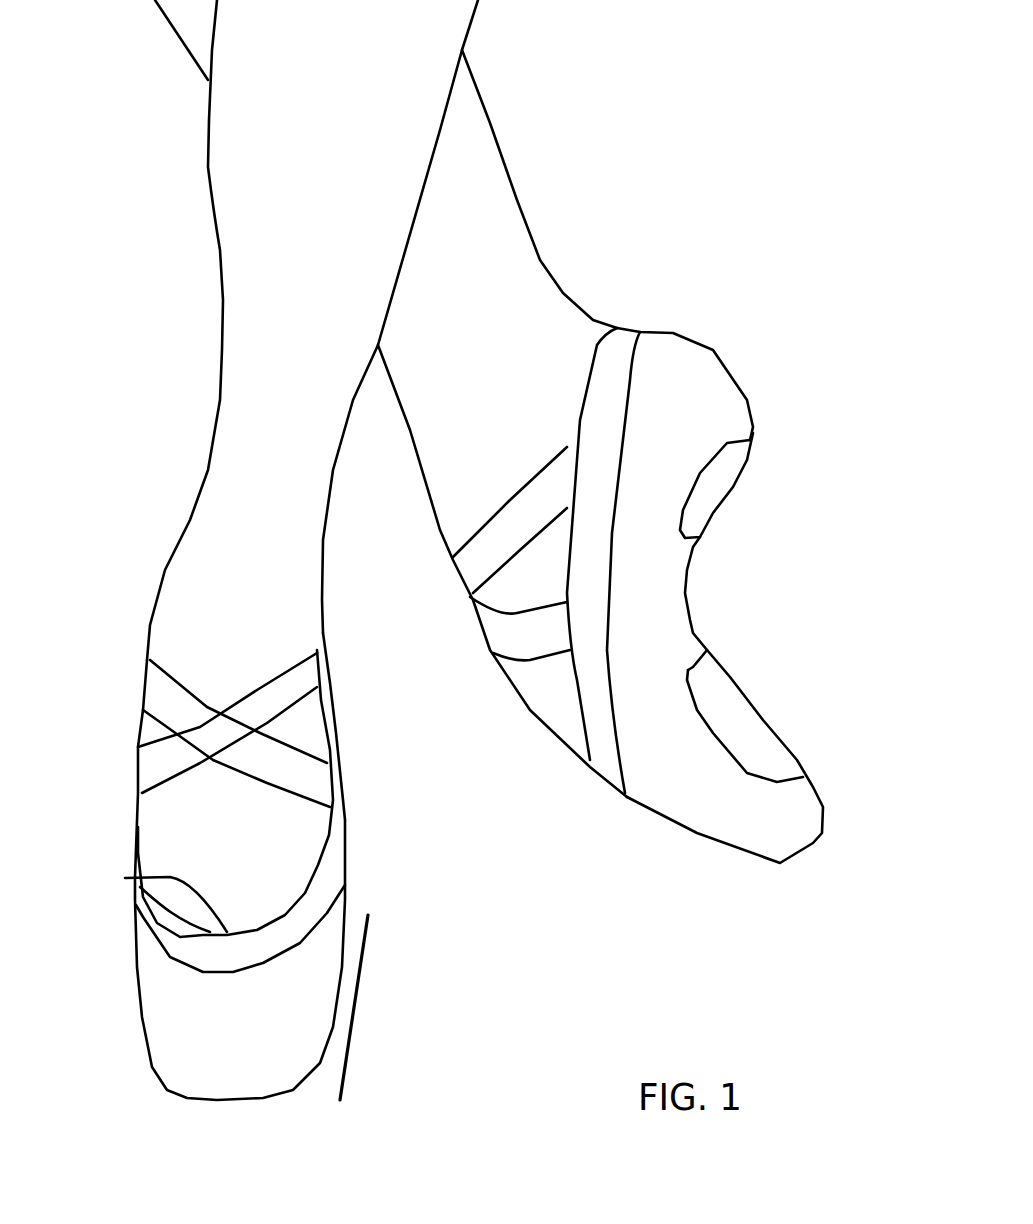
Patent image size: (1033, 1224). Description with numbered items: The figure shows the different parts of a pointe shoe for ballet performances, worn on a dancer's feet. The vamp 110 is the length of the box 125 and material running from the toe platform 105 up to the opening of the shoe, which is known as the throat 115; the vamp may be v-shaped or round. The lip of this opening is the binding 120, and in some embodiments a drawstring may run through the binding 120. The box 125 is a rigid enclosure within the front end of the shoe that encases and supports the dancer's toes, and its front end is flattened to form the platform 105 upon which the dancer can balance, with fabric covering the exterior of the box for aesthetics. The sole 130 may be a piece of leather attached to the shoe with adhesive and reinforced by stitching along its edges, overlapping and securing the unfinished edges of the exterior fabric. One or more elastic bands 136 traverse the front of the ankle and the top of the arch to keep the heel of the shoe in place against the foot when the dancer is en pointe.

The toe platform 105 is at (240, 1100).
The vamp 110 is at (213, 1057).
The throat 115 is at (125, 878).
The binding 120 is at (330, 878).
The box 125 is at (350, 1033).
The sole 130 is at (718, 480).
The elastic band 136 is at (312, 782).